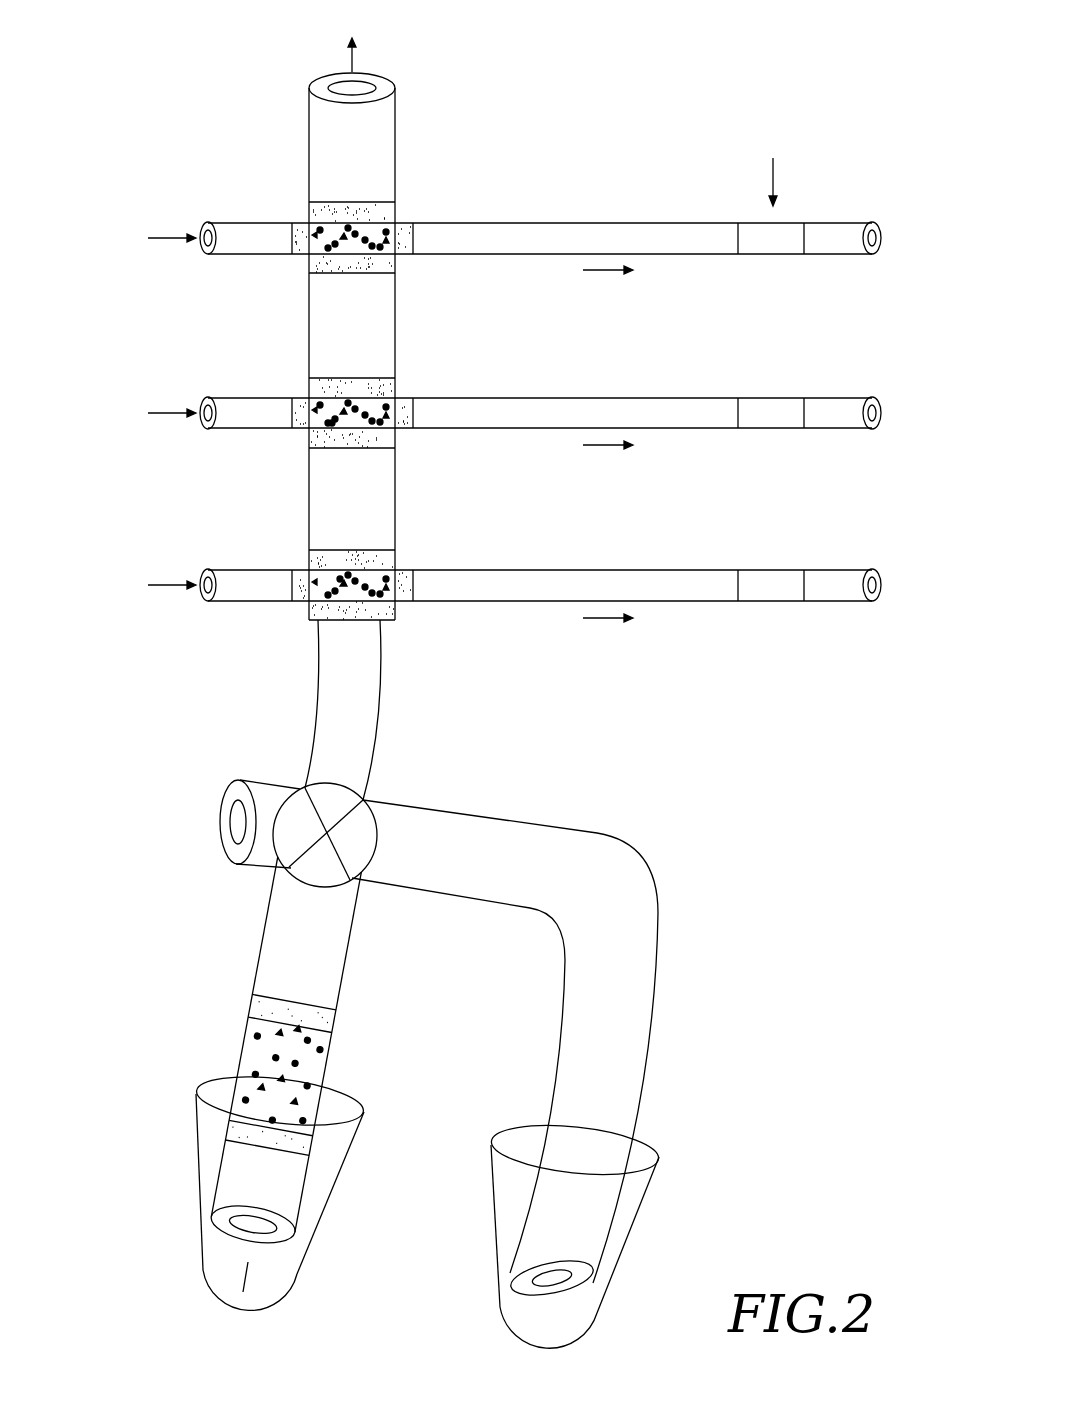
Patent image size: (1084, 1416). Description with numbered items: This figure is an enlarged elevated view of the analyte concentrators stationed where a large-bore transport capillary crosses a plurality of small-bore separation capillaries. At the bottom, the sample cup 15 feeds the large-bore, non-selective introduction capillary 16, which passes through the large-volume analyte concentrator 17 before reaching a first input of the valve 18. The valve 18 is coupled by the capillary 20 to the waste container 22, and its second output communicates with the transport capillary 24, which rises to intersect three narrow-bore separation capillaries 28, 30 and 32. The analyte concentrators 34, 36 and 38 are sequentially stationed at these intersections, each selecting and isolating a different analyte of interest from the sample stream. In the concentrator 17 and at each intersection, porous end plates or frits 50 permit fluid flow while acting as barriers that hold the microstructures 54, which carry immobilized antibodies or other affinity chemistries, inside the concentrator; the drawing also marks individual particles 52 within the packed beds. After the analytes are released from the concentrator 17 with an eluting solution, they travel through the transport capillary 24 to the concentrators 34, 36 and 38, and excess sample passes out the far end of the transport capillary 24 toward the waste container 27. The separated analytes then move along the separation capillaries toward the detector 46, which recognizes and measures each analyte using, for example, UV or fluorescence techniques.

The sample cup 15 is at (295, 1220).
The introduction capillary 16 is at (232, 1183).
The analyte concentrator 17 is at (243, 1047).
The valve 18 is at (355, 822).
The capillary 20 is at (618, 1000).
The waste container 22 is at (622, 1217).
The transport capillary 24 is at (370, 160).
The waste container 27 is at (352, 38).
The separation capillary 28 is at (228, 588).
The separation capillary 30 is at (228, 412).
The separation capillary 32 is at (235, 240).
The analyte concentrator 34 is at (377, 575).
The analyte concentrator 36 is at (377, 402).
The analyte concentrator 38 is at (377, 230).
The detector 46 is at (773, 167).
The frits 50 is at (407, 245).
The particle 52 is at (332, 422).
The microstructures 54 is at (332, 228).